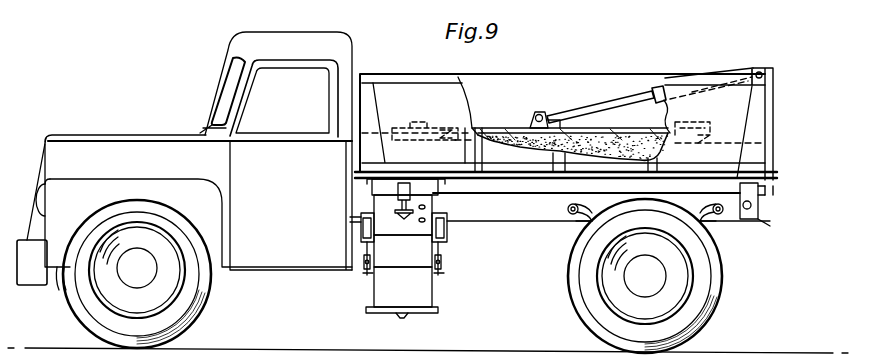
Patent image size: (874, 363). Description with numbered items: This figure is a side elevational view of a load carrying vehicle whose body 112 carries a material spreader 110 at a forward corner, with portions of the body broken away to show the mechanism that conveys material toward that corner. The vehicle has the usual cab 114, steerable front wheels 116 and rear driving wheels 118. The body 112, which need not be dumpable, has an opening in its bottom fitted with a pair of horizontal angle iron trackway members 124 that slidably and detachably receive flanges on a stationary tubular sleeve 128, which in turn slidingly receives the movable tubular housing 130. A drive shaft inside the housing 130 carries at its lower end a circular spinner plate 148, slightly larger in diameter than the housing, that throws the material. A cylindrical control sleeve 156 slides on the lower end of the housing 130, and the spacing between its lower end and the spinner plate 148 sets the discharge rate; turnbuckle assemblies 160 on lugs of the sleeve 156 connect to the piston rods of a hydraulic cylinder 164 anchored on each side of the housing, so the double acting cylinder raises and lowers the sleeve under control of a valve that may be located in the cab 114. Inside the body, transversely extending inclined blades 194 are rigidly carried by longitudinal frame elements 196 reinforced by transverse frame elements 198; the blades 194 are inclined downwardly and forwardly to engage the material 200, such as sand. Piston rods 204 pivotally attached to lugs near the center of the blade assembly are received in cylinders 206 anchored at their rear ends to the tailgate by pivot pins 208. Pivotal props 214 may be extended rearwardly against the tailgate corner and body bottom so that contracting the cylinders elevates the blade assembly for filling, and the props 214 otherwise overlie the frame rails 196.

The material spreader 110 is at (428, 267).
The load carrying vehicle body 112 is at (385, 103).
The cab 114 is at (290, 44).
The steerable front wheels 116 is at (207, 288).
The rear driving wheels 118 is at (722, 300).
The horizontal angle iron trackway members 124 is at (440, 183).
The stationary tubular sleeve 128 is at (436, 198).
The movable tubular sleeve or housing 130 is at (425, 258).
The spinner plate 148 is at (432, 314).
The cylindrical control sleeve 156 is at (375, 292).
The turnbuckle assemblies 160 is at (362, 263).
The hydraulic cylinder 164 is at (448, 234).
The inclined blades 194 is at (508, 140).
The longitudinal frame elements 196 is at (487, 126).
The transverse frame elements 198 is at (556, 112).
The material 200 is at (620, 145).
The piston rods 204 is at (612, 102).
The cylinders 206 is at (737, 59).
The pivot pins 208 is at (763, 68).
The pivotal props 214 is at (680, 127).